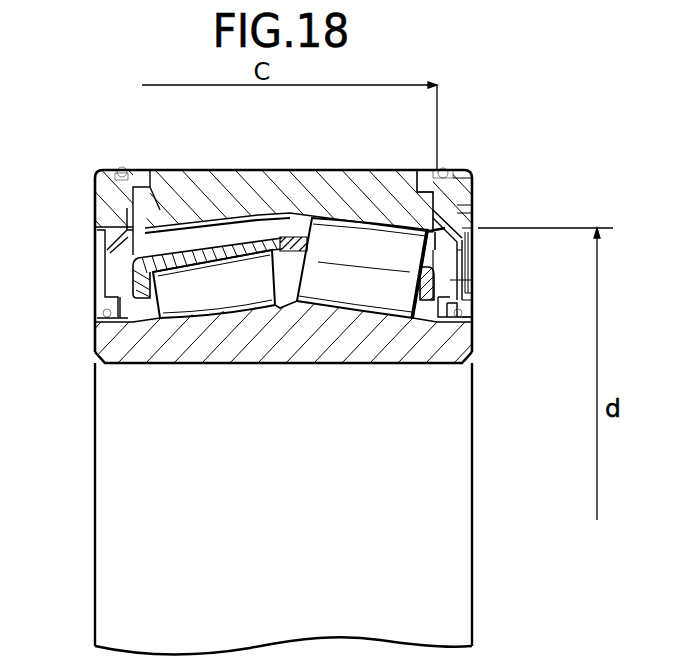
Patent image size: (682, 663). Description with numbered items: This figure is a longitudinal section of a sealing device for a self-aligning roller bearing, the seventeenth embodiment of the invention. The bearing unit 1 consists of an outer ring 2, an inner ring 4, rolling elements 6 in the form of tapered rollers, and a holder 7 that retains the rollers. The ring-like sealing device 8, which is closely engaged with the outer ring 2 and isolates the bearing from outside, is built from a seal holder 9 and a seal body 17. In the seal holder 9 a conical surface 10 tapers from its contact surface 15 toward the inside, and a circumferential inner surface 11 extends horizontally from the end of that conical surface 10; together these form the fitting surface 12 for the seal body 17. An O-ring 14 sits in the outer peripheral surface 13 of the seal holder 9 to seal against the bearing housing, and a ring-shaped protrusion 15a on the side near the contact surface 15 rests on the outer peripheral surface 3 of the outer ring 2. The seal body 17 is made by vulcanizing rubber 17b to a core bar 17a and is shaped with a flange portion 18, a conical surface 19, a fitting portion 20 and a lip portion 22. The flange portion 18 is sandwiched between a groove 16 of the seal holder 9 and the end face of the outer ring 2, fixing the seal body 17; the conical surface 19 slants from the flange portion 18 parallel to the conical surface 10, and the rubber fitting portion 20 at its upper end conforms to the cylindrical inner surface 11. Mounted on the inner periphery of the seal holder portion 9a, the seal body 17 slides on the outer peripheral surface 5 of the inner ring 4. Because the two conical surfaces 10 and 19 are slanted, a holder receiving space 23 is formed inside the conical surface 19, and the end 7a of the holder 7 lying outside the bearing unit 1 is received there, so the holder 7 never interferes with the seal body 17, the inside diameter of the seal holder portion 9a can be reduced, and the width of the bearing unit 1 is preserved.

The bearing unit 1 is at (258, 166).
The outer ring 2 is at (300, 170).
The outer peripheral surface 3 is at (473, 193).
The inner ring 4 is at (253, 365).
The outer peripheral surface 5 is at (427, 322).
The rolling element 6 is at (330, 315).
The holder 7 is at (416, 290).
The end of the holder 7a is at (422, 319).
The sealing device 8 is at (508, 169).
The seal holder 9 is at (497, 174).
The seal holder portion 9a is at (487, 236).
The conical surface 10 is at (427, 234).
The circumferential inner surface 11 is at (473, 223).
The fitting surface 12 is at (406, 267).
The outer peripheral surface 13 is at (483, 169).
The O-ring 14 is at (447, 168).
The contact surface 15 is at (433, 207).
The protrusion 15a is at (436, 190).
The groove 16 is at (430, 207).
The seal body 17 is at (443, 328).
The core bar 17a is at (455, 281).
The rubber 17b is at (475, 311).
The flange portion 18 is at (473, 205).
The conical surface 19 is at (473, 213).
The fitting portion 20 is at (478, 253).
The lip portion 22 is at (475, 331).
The holder receiving space 23 is at (470, 299).